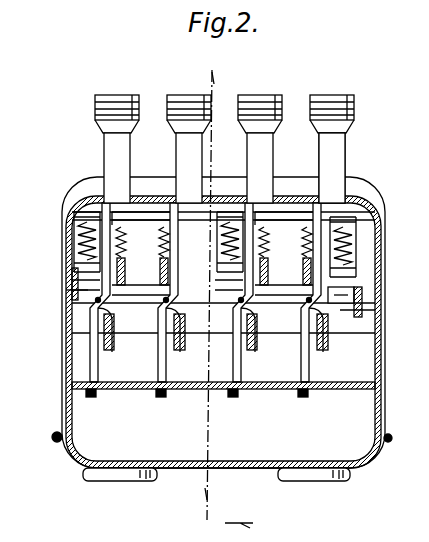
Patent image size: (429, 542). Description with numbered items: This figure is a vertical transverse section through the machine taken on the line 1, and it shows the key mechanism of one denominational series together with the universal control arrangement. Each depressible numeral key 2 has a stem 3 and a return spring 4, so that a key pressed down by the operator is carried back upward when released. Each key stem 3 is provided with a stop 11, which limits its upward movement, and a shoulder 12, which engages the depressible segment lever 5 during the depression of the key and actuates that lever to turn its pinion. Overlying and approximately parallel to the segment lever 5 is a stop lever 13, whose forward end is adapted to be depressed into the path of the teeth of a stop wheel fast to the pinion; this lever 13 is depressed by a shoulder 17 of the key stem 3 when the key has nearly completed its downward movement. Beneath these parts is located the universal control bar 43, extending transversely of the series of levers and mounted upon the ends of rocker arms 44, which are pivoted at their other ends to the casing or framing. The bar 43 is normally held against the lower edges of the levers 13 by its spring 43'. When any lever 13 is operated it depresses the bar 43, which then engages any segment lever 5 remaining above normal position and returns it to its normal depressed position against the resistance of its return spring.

The section line 1 is at (226, 296).
The depressible numeral keys 2 is at (311, 95).
The stems 3 is at (346, 163).
The return springs 4 is at (62, 240).
The depressible lever 5 is at (196, 348).
The stop 11 is at (154, 393).
The shoulder 12 is at (118, 310).
The levers 13 is at (154, 296).
The shoulders 17 is at (214, 242).
The universal control bar 43 is at (372, 296).
The spring 43' is at (46, 284).
The rocker arms 44 is at (383, 316).